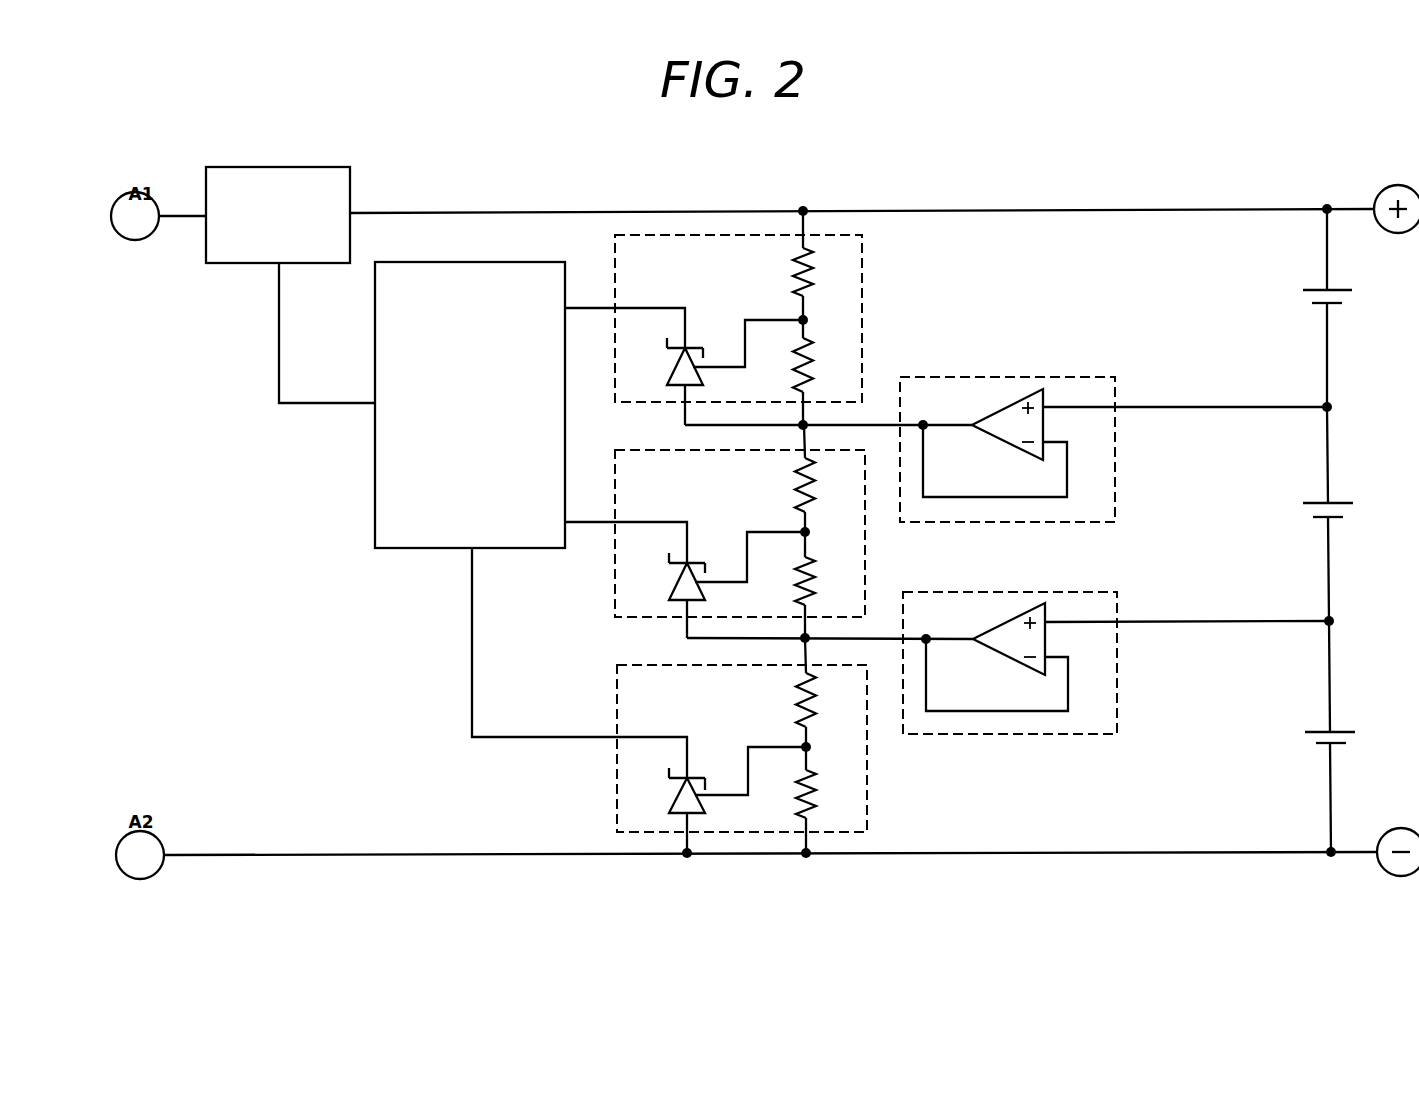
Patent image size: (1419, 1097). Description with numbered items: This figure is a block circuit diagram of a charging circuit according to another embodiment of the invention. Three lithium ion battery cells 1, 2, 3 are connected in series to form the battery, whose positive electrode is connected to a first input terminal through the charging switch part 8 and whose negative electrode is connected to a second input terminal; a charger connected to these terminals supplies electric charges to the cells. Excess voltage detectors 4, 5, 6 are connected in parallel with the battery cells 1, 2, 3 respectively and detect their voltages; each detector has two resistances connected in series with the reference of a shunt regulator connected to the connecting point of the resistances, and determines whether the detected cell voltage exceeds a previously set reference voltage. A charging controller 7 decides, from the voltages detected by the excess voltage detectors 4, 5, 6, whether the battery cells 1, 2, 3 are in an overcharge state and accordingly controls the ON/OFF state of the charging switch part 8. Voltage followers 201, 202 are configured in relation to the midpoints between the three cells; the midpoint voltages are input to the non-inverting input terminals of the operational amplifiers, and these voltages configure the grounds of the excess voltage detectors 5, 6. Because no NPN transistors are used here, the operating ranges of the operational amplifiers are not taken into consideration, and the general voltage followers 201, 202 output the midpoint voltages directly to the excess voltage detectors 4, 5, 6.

The battery cell 1 is at (1315, 730).
The battery cell 2 is at (1312, 503).
The battery cell 3 is at (1310, 290).
The excess voltage detector 4 is at (867, 797).
The excess voltage detector 5 is at (865, 577).
The excess voltage detector 6 is at (862, 355).
The charging controller 7 is at (488, 260).
The charging switch part 8 is at (270, 165).
The voltage follower 201 is at (1117, 685).
The voltage follower 202 is at (1115, 470).